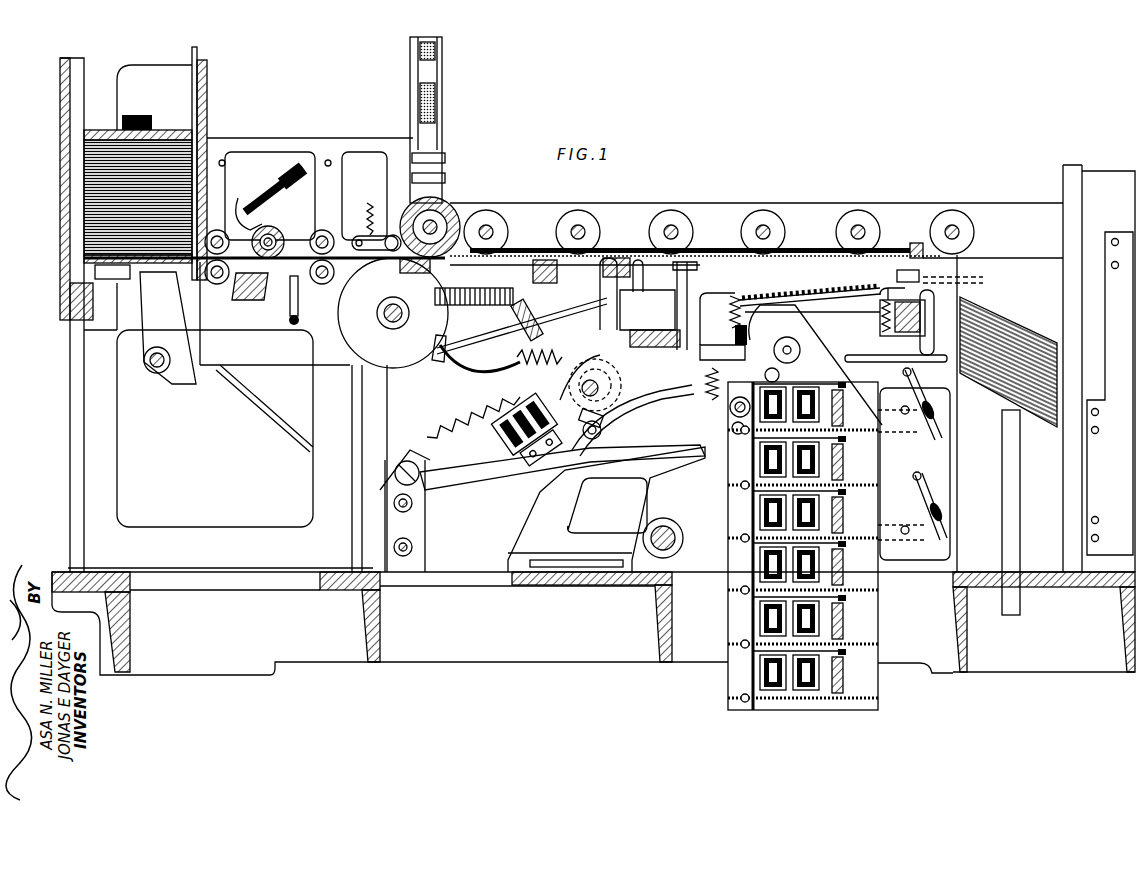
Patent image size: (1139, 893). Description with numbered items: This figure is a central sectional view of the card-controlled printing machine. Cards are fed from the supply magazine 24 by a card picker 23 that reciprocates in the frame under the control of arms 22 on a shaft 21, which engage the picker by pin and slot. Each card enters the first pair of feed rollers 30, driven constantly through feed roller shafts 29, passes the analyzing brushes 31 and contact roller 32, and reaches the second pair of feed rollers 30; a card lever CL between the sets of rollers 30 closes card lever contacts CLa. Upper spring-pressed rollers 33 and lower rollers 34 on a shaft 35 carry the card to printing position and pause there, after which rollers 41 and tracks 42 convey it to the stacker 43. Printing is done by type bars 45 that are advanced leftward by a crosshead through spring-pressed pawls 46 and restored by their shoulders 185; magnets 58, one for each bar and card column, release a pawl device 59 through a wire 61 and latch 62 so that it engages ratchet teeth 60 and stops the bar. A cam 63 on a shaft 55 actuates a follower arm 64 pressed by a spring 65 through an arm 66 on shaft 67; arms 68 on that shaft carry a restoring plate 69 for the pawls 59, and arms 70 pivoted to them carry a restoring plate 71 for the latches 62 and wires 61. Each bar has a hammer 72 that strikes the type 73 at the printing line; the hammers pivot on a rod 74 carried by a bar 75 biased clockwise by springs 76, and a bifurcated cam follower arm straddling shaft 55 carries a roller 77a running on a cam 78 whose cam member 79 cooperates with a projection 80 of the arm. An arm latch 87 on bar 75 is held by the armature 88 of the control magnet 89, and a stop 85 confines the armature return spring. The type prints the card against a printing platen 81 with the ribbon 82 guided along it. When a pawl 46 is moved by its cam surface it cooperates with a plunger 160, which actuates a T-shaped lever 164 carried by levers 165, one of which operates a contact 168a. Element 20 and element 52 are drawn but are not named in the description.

The frame panel 20 is at (266, 410).
The shaft 21 is at (155, 370).
The arms 22 is at (150, 311).
The card picker 23 is at (120, 279).
The supply stack or magazine 24 is at (110, 208).
The feed roller shafts 29 is at (208, 258).
The feed rollers 30 is at (218, 286).
The brushes 31 is at (258, 299).
The contact roller 32 is at (250, 221).
The upper spring-pressed rollers 33 is at (393, 232).
The lower rollers 34 is at (360, 350).
The shaft 35 is at (377, 320).
The rollers 41 is at (573, 217).
The tracks 42 is at (526, 250).
The stacker 43 is at (1010, 323).
The type bars 45 is at (790, 250).
The spring-pressed pawl 46 is at (925, 290).
The shaft 52 is at (680, 545).
The shaft 55 is at (575, 462).
The magnets 58 is at (820, 512).
The pawl device 59 is at (760, 290).
The ratchet teeth 60 is at (815, 285).
The wire 61 is at (747, 468).
The latch 62 is at (731, 310).
The cam 63 is at (628, 386).
The follower arm 64 is at (447, 472).
The spring 65 is at (710, 388).
The arm 66 is at (730, 412).
The shaft 67 is at (732, 432).
The arms 68 is at (782, 378).
The restoring plate 69 is at (794, 352).
The arms 70 is at (820, 347).
The restoring plate 71 is at (708, 368).
The hammer 72 is at (508, 322).
The type 73 is at (476, 296).
The rod 74 is at (583, 290).
The bar 75 is at (600, 312).
The springs 76 is at (427, 436).
The roller 77a is at (636, 348).
The cam 78 is at (543, 330).
The cam member 79 is at (645, 425).
The projection 80 is at (625, 378).
The printing platen 81 is at (447, 207).
The ribbon 82 is at (438, 118).
The stop 85 is at (592, 440).
The arm latch 87 is at (512, 363).
The armature 88 is at (520, 420).
The control magnet 89 is at (506, 426).
The plunger 160 is at (935, 303).
The T-shaped lever 164 is at (862, 357).
The lever 165 is at (905, 378).
The contact 168a is at (958, 455).
The shoulders 185 is at (878, 293).
The card lever CL is at (274, 214).
The card lever contacts CLa is at (247, 207).